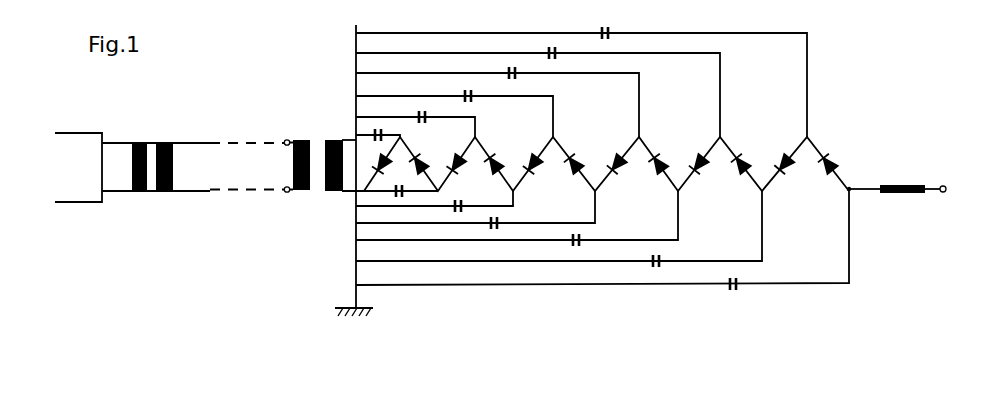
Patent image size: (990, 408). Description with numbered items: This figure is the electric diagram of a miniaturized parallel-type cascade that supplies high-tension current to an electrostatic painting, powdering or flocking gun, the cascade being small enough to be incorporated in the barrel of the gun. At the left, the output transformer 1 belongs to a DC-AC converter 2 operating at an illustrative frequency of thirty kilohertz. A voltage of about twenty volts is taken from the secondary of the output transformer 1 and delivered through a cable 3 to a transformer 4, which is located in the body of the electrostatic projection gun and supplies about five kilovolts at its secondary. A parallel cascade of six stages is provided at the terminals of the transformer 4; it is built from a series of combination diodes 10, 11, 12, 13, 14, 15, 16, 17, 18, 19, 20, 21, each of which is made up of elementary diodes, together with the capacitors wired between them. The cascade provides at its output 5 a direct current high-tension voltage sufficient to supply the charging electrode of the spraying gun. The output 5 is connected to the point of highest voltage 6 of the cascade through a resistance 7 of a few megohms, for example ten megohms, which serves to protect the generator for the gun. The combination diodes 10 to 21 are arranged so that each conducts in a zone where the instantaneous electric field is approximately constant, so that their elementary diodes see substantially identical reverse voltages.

The output transformer 1 is at (152, 147).
The DC-AC converter 2 is at (83, 146).
The cable 3 is at (237, 157).
The transformer 4 is at (316, 183).
The output 5 is at (944, 182).
The point of highest voltage 6 is at (851, 183).
The resistance 7 is at (902, 195).
The combination diode 10 is at (385, 174).
The combination diode 11 is at (417, 176).
The combination diode 12 is at (462, 176).
The combination diode 13 is at (496, 176).
The combination diode 14 is at (541, 174).
The combination diode 15 is at (575, 176).
The combination diode 16 is at (624, 174).
The combination diode 17 is at (661, 176).
The combination diode 18 is at (706, 174).
The combination diode 19 is at (743, 176).
The combination diode 20 is at (790, 174).
The combination diode 21 is at (829, 176).